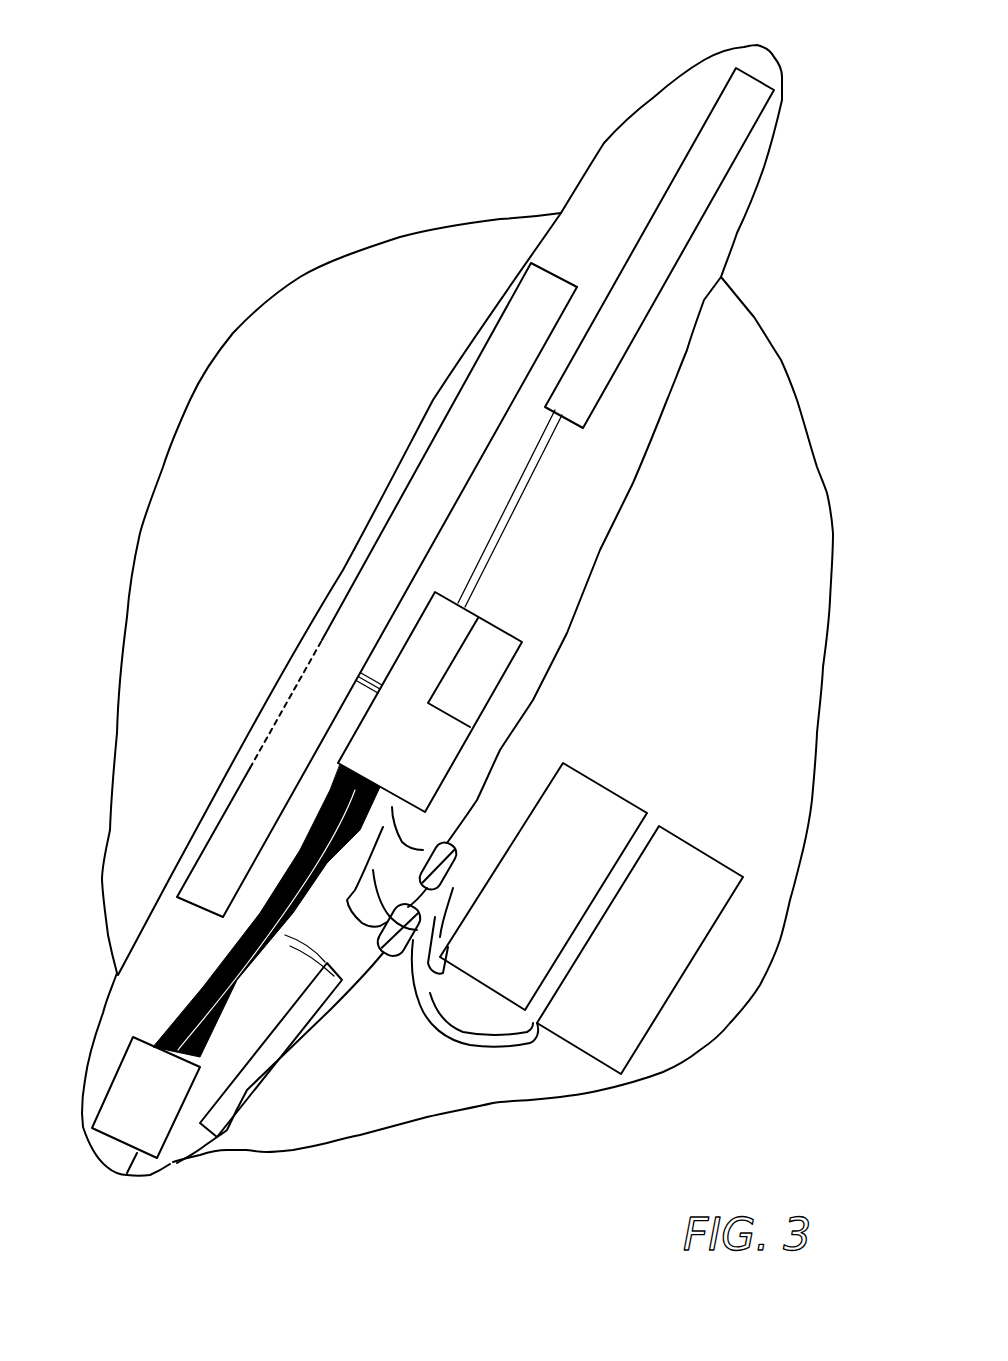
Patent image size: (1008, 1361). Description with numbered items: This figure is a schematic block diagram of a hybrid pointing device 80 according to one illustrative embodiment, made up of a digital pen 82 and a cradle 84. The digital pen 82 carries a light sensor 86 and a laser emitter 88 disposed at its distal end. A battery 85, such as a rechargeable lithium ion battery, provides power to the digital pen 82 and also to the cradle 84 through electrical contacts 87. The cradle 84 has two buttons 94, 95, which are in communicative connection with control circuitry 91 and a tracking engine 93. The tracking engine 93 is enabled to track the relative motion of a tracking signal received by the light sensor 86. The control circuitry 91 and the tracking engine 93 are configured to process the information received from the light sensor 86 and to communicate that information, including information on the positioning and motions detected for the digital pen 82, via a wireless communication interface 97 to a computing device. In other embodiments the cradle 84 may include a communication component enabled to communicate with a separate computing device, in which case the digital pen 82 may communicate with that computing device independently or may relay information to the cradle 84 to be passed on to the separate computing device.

The hybrid pointing device 80 is at (120, 85).
The digital pen 82 is at (575, 186).
The cradle 84 is at (288, 272).
The battery 85 is at (356, 731).
The light sensor 86 is at (124, 1175).
The electrical contacts 87 is at (457, 890).
The laser emitter 88 is at (252, 1088).
The control circuitry 91 is at (406, 640).
The tracking engine 93 is at (525, 652).
The button 94 is at (600, 785).
The button 95 is at (687, 842).
The wireless communication interface 97 is at (706, 210).